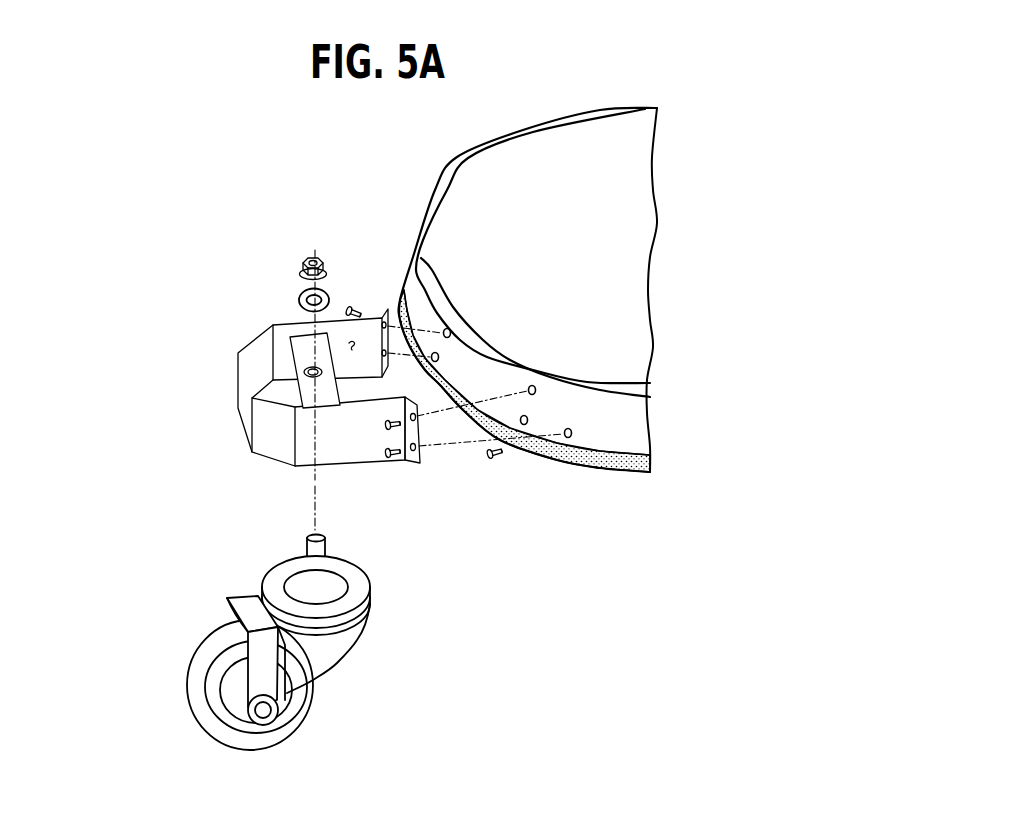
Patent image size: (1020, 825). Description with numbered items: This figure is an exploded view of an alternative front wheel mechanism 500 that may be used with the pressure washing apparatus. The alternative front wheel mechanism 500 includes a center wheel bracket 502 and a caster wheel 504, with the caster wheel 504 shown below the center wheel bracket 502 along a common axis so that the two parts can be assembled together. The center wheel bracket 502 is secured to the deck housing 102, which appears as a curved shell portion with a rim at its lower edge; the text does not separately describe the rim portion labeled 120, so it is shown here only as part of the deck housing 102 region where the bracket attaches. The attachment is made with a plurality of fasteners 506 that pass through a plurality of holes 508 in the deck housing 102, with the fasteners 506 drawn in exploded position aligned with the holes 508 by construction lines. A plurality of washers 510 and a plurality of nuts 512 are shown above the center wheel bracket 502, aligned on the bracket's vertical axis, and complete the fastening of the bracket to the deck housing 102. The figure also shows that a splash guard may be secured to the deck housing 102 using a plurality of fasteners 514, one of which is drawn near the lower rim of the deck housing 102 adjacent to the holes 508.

The alternative front wheel mechanism 500 is at (437, 429).
The deck housing 102 is at (420, 247).
The rim flange 120 is at (627, 477).
The center wheel bracket 502 is at (240, 368).
The caster wheel 504 is at (205, 672).
The fasteners 506 is at (360, 312).
The holes 508 is at (455, 336).
The washers 510 is at (300, 303).
The nuts 512 is at (305, 265).
The fasteners 514 is at (497, 462).